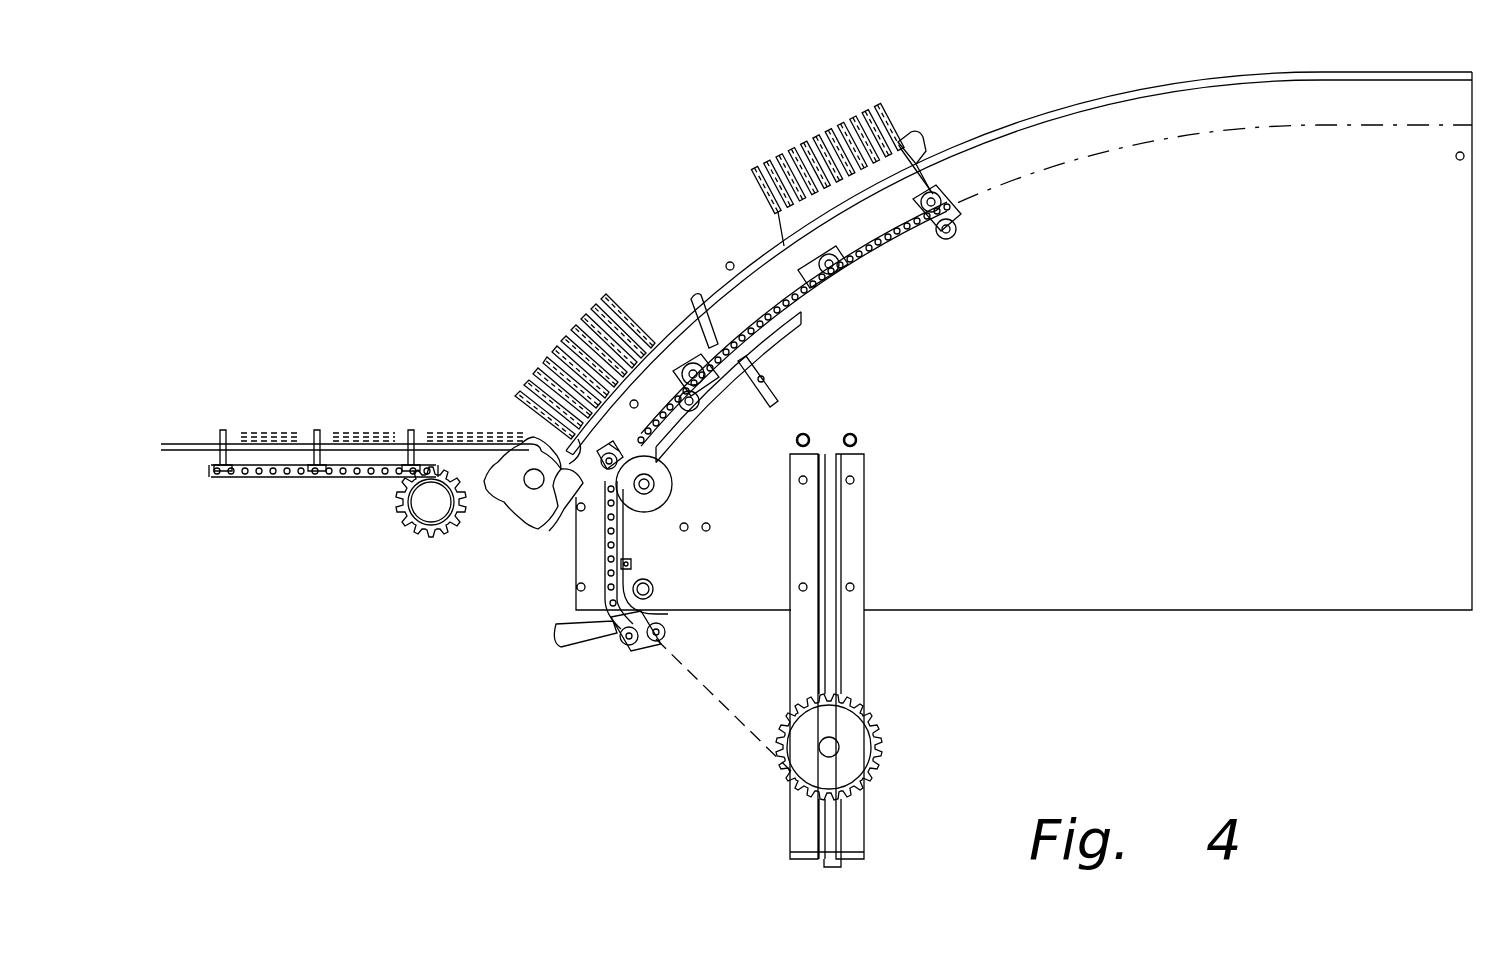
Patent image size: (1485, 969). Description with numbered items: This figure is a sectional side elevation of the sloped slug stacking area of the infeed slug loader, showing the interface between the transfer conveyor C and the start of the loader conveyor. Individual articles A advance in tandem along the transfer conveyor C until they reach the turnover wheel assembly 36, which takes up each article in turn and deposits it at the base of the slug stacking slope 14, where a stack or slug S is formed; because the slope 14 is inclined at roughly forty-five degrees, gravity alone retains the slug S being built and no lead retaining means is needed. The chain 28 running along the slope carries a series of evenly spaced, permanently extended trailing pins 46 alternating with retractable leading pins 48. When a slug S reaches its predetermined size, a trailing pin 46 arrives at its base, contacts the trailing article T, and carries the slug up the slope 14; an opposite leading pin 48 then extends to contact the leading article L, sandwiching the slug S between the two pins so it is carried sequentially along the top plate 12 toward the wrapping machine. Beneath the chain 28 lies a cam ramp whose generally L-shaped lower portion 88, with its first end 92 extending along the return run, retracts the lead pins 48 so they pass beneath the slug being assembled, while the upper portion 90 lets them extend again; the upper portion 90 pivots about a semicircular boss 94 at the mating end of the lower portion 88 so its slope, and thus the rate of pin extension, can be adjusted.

The top plate 12 is at (1170, 90).
The slug stacking slope 14 is at (740, 278).
The chain 28 is at (880, 248).
The turnover wheel assembly 36 is at (495, 543).
The trailing pins 46 is at (798, 286).
The leading pins 48 is at (926, 136).
The lower cam ramp portion 88 is at (626, 544).
The upper cam ramp portion 90 is at (688, 410).
The first end 92 is at (666, 618).
The semicircular boss 94 is at (672, 486).
The transfer conveyor C is at (333, 404).
The articles A is at (460, 430).
The trailing article T is at (518, 434).
The leading article L is at (644, 300).
The slug S is at (700, 146).